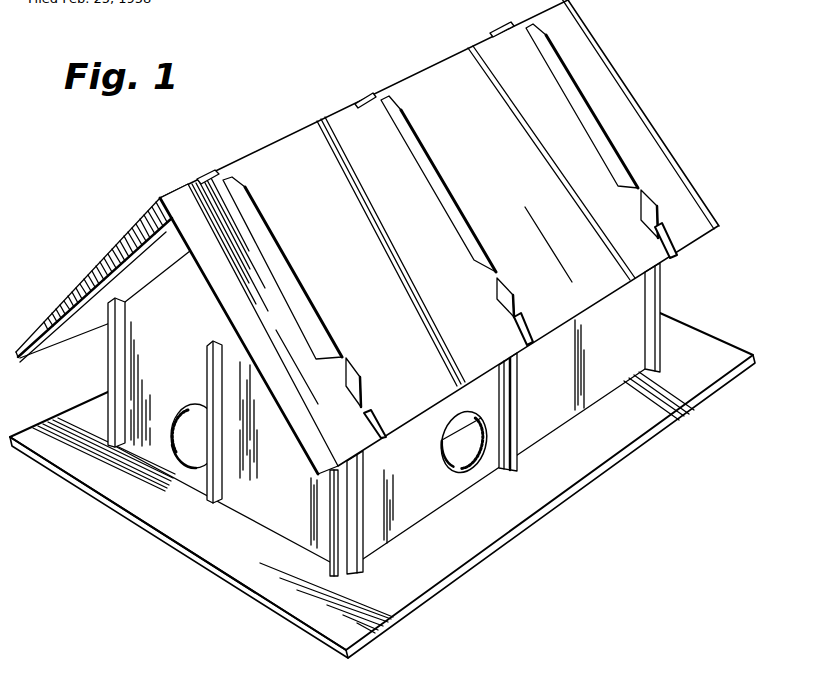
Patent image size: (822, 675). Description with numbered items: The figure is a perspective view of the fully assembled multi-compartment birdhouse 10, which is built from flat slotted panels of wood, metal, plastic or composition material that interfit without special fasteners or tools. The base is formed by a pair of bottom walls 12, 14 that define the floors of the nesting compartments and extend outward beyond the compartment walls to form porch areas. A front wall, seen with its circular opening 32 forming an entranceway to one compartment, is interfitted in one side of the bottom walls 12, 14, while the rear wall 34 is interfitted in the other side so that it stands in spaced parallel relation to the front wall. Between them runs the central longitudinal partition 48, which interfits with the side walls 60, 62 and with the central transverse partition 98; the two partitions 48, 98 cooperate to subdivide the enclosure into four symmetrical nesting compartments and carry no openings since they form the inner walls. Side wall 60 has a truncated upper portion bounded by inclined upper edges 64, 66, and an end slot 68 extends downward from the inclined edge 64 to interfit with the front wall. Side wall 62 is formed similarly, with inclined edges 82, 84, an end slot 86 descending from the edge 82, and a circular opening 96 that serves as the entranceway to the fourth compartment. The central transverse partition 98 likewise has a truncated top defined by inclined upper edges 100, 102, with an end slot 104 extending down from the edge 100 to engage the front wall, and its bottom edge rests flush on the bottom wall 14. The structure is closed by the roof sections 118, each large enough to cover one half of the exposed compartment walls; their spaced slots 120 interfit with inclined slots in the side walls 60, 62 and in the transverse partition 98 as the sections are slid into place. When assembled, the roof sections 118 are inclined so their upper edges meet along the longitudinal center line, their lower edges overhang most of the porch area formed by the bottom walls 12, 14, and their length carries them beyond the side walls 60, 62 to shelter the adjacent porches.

The birdhouse 10 is at (297, 97).
The bottom wall 12 is at (700, 339).
The bottom wall 14 is at (217, 557).
The circular opening 32 is at (441, 450).
The rear wall 34 is at (110, 358).
The central longitudinal partition 48 is at (208, 478).
The side wall 60 is at (659, 288).
The side wall 62 is at (290, 523).
The inclined upper edge 64 is at (566, 64).
The inclined upper edge 66 is at (491, 30).
The end slot 68 is at (644, 190).
The inclined edge 82 is at (286, 251).
The inclined edge 84 is at (200, 180).
The end slot 86 is at (347, 357).
The circular opening 96 is at (192, 405).
The central transverse partition 98 is at (509, 402).
The inclined upper edge 100 is at (426, 152).
The inclined upper edge 102 is at (354, 103).
The end slot 104 is at (496, 270).
The roof section 118 is at (134, 242).
The slot 120 is at (372, 418).